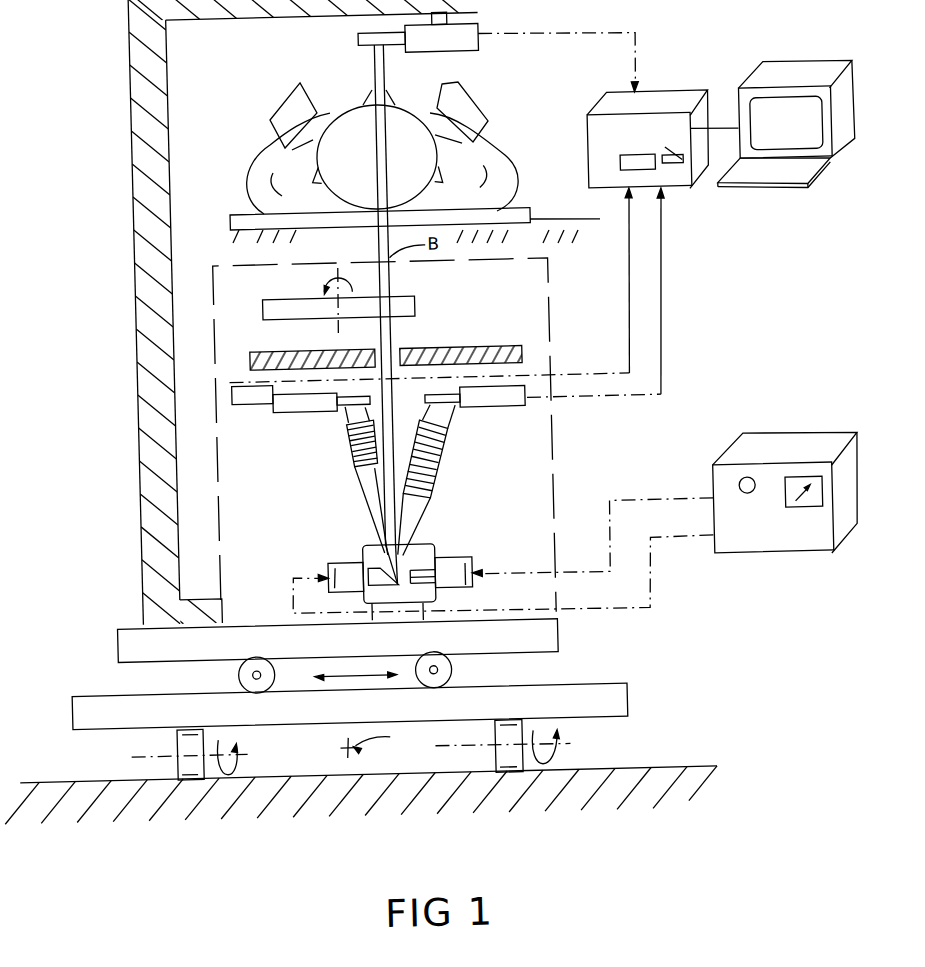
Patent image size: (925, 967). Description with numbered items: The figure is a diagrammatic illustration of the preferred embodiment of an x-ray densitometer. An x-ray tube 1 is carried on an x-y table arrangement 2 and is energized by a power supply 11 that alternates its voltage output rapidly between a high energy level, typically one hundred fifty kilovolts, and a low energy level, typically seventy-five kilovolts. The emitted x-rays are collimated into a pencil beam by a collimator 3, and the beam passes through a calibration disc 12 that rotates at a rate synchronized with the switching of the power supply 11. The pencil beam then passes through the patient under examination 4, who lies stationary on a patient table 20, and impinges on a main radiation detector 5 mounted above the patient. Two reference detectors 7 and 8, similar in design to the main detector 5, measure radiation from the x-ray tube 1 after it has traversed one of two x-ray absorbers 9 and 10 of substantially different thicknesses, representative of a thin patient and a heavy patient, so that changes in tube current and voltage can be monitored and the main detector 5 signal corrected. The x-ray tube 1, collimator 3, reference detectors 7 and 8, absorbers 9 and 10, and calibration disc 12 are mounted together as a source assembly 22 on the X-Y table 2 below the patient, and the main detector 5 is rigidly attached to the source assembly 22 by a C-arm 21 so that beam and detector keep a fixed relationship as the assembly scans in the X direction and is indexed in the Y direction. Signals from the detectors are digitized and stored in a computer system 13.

The x-ray tube 1 is at (433, 554).
The x-y table arrangement 2 is at (322, 676).
The collimator 3 is at (483, 345).
The patient under examination 4 is at (467, 129).
The main radiation detector 5 is at (487, 28).
The reference detector 7 is at (282, 411).
The reference detector 8 is at (493, 411).
The x-ray absorber 9 is at (351, 454).
The x-ray absorber 10 is at (436, 459).
The power supply 11 is at (802, 442).
The calibration disc 12 is at (417, 306).
The computer system 13 is at (682, 195).
The patient table 20 is at (525, 216).
The C-arm 21 is at (136, 254).
The source assembly 22 is at (553, 482).